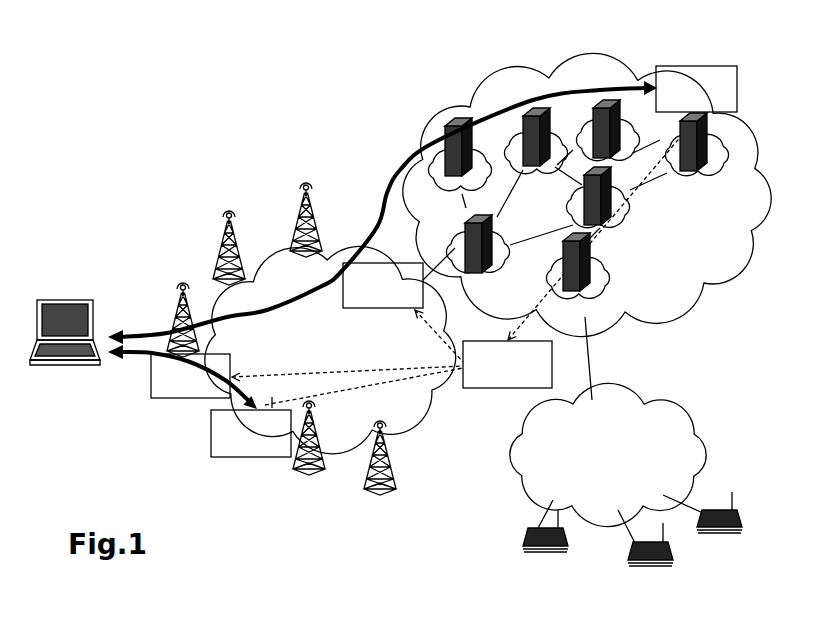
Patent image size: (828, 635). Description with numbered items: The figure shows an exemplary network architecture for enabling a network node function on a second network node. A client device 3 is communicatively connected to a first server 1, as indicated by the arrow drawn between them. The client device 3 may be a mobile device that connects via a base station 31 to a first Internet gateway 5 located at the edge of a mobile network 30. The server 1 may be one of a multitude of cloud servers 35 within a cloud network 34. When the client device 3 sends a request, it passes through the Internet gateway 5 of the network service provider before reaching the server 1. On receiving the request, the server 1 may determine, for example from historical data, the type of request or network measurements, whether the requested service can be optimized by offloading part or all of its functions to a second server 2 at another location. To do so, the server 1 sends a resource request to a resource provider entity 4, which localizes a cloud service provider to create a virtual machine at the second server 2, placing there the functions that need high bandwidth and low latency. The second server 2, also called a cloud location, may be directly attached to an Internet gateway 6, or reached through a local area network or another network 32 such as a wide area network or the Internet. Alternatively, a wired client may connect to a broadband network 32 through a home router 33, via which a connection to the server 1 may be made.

The first server 1 is at (688, 75).
The second server 2 is at (242, 445).
The client device 3 is at (63, 297).
The resource provider entity 4 is at (500, 378).
The first Internet gateway 5 is at (368, 272).
The Internet gateway 6 is at (173, 390).
The mobile network 30 is at (400, 398).
The base station 31 is at (178, 310).
The broadband network 32 is at (665, 408).
The home router 33 is at (543, 548).
The cloud network 34 is at (690, 258).
The cloud servers 35 is at (585, 272).